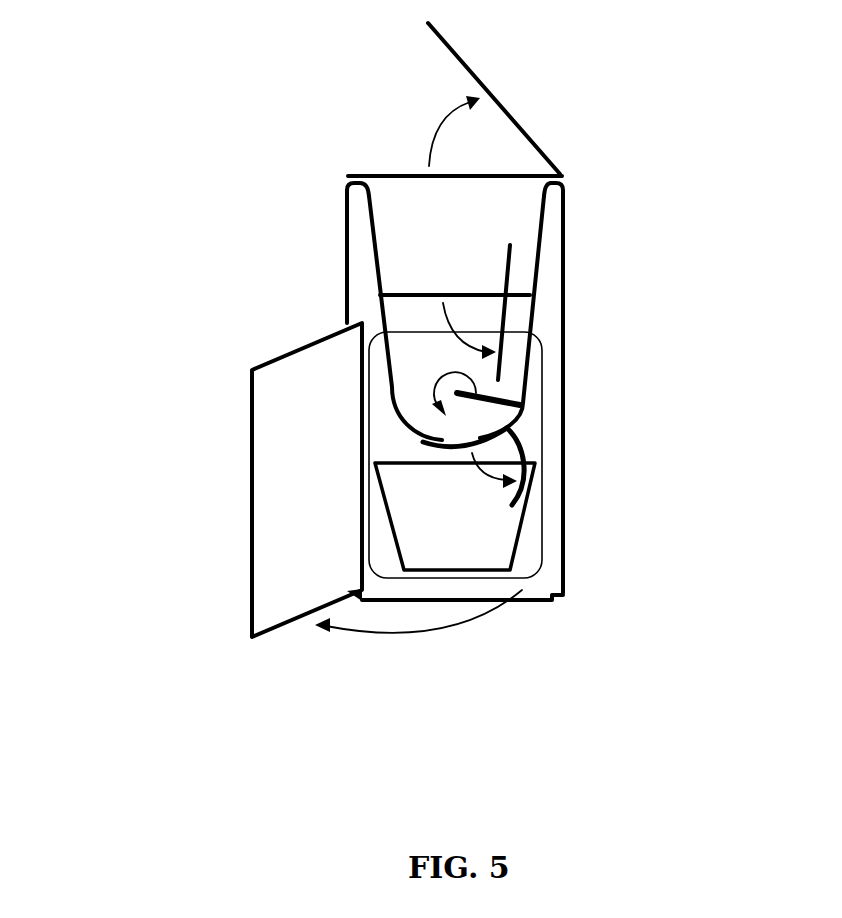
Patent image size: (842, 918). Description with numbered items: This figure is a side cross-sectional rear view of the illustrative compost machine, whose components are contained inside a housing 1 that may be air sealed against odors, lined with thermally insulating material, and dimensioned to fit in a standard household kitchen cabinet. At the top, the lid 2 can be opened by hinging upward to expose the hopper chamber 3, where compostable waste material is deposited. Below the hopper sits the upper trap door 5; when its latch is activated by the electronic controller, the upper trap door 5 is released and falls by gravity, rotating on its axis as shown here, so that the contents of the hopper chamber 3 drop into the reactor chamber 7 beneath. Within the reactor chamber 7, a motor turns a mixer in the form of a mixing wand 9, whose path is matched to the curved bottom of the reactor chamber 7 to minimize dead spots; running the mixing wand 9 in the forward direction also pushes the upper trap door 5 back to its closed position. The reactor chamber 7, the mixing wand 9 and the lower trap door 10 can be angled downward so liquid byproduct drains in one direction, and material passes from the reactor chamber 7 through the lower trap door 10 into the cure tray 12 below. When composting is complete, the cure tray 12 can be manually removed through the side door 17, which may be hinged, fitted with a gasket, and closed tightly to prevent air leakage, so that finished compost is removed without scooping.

The housing 1 is at (353, 212).
The lid 2 is at (508, 112).
The hopper chamber 3 is at (518, 213).
The upper trap door 5 is at (510, 278).
The reactor chamber 7 is at (427, 313).
The mixing wand 9 is at (513, 397).
The lower trap door 10 is at (527, 447).
The cure tray 12 is at (515, 550).
The side door 17 is at (252, 605).